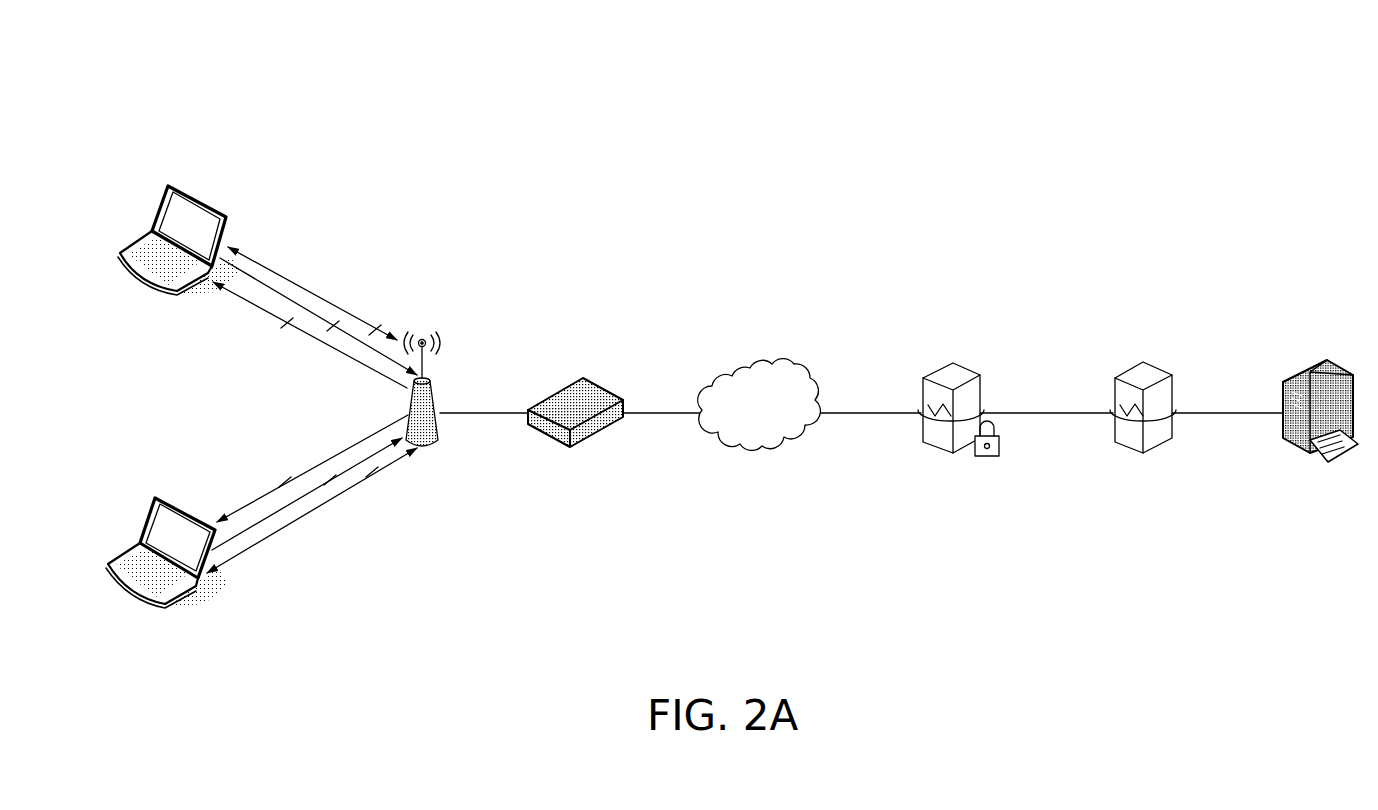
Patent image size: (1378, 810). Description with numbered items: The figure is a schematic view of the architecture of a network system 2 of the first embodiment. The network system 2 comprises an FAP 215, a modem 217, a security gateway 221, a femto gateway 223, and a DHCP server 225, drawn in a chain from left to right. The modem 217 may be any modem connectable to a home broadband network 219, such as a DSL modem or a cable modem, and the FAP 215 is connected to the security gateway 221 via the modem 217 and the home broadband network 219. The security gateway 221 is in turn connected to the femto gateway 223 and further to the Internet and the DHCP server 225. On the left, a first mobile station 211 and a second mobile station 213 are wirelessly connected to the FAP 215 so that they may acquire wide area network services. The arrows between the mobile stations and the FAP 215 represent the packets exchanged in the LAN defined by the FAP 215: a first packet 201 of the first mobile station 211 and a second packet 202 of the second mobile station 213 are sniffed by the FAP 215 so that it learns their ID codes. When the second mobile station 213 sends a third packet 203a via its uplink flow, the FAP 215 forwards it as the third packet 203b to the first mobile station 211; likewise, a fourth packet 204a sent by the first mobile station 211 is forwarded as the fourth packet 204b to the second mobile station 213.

The network system 2 is at (705, 70).
The first packet 201 is at (372, 328).
The second packet 202 is at (370, 476).
The third packet 203a is at (330, 324).
The third packet 203b is at (283, 486).
The fourth packet 204a is at (328, 484).
The fourth packet 204b is at (285, 321).
The first mobile station 211 is at (195, 196).
The second mobile station 213 is at (153, 497).
The FAP 215 is at (437, 398).
The modem 217 is at (583, 378).
The home broadband network 219 is at (790, 362).
The security gateway 221 is at (953, 363).
The femto gateway 223 is at (1143, 362).
The DHCP server 225 is at (1327, 360).